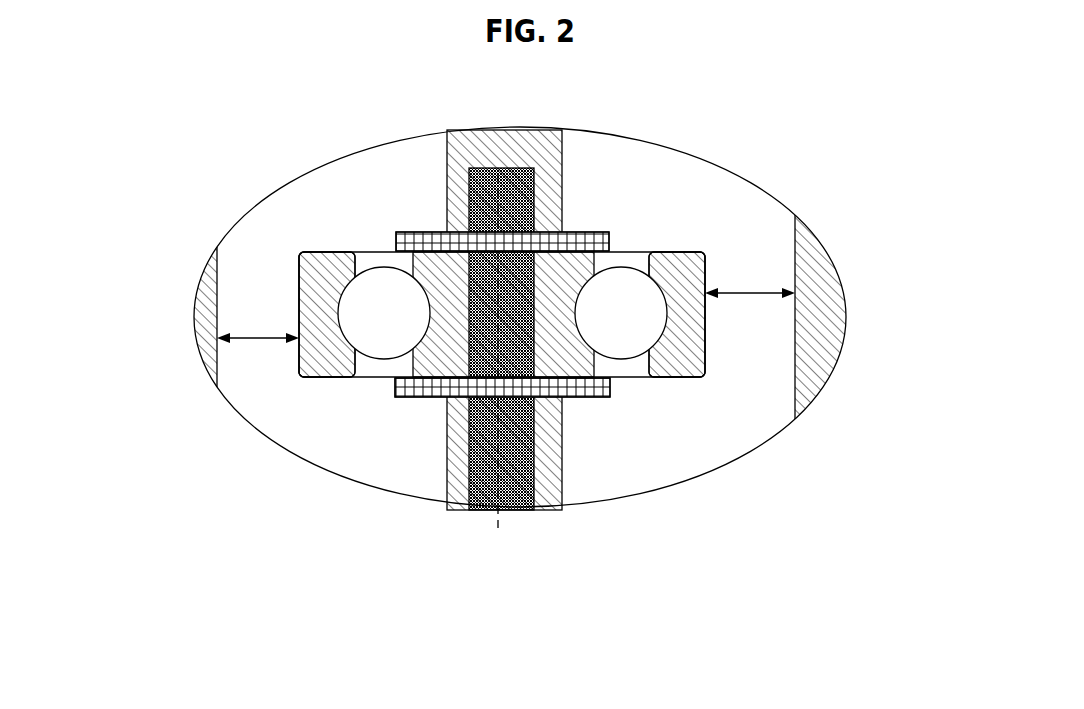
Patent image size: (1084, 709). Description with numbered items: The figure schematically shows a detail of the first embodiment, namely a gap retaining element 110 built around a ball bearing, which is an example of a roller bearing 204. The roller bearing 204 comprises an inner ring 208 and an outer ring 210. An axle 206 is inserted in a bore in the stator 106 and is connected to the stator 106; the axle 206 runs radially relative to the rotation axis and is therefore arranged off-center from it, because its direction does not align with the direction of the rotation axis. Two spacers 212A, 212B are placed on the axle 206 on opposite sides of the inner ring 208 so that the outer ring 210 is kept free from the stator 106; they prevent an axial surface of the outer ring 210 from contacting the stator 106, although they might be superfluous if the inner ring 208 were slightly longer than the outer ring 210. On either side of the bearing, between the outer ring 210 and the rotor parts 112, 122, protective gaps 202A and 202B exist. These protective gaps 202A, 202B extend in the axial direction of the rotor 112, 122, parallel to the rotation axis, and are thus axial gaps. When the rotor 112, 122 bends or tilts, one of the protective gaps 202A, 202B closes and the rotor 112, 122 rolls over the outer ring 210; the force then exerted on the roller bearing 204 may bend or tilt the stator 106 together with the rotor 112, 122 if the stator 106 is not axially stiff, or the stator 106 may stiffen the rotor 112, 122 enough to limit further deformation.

The gap retaining element 110 is at (713, 518).
The rotor part 112 is at (216, 352).
The rotor part 122 is at (823, 330).
The stator 106 is at (463, 473).
The roller bearing 204 is at (604, 287).
The axle 206 is at (499, 478).
The inner ring 208 is at (563, 358).
The outer ring 210 is at (604, 353).
The spacer 212A is at (427, 236).
The spacer 212B is at (397, 398).
The protective gap 202A is at (252, 338).
The protective gap 202B is at (748, 292).